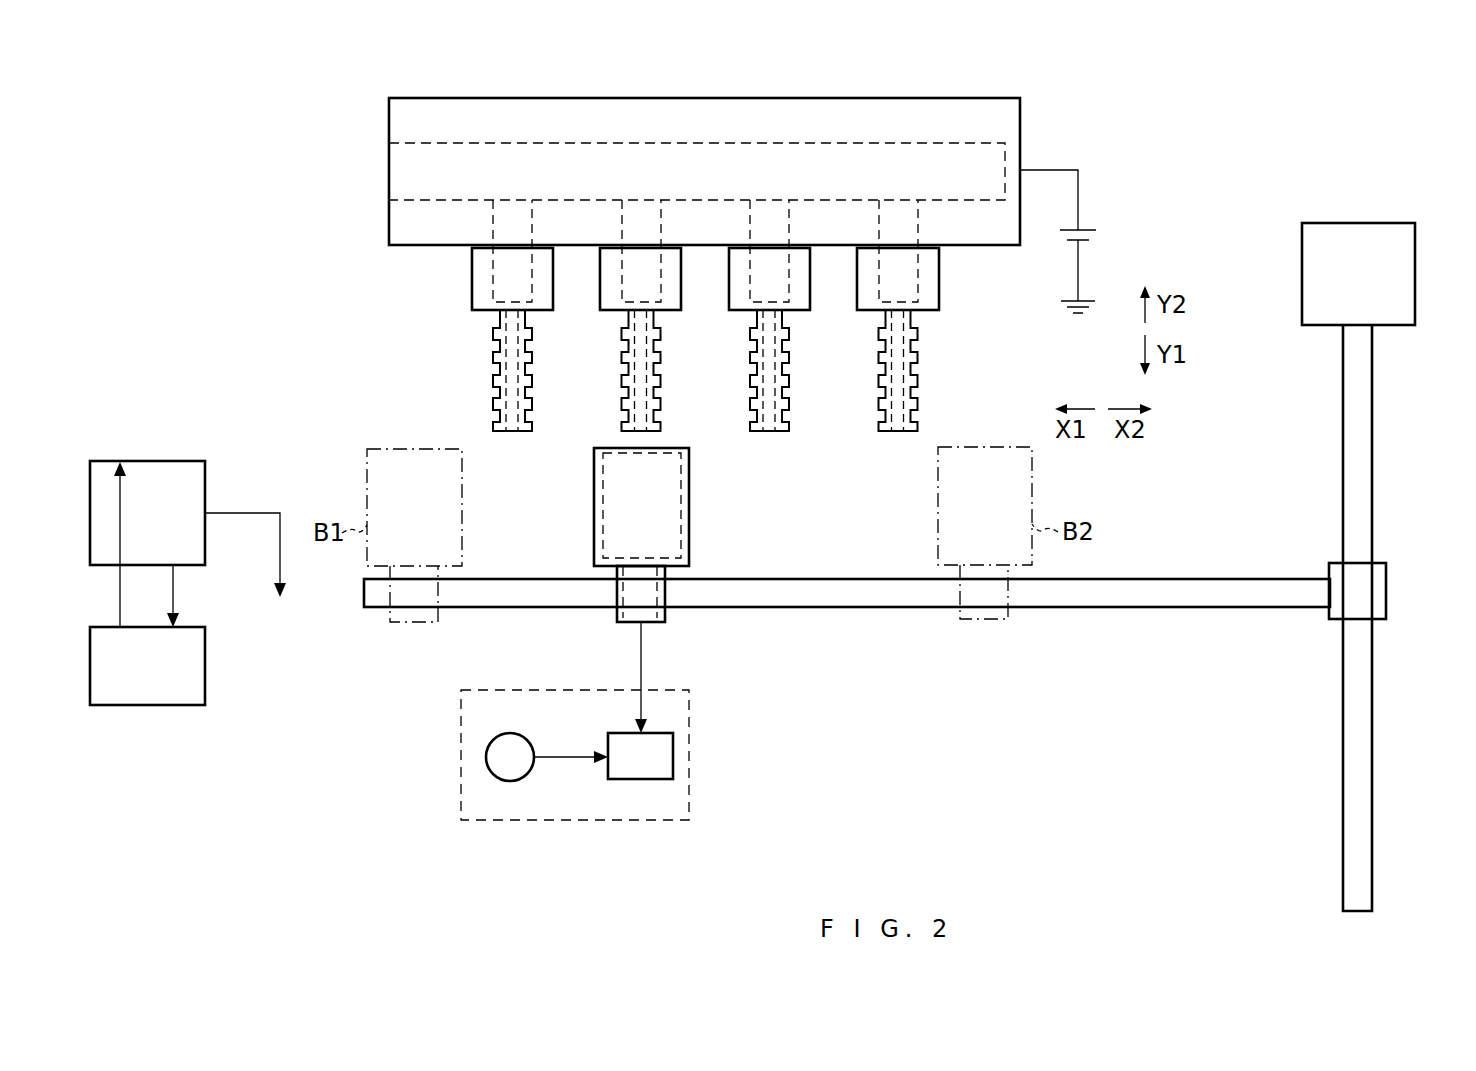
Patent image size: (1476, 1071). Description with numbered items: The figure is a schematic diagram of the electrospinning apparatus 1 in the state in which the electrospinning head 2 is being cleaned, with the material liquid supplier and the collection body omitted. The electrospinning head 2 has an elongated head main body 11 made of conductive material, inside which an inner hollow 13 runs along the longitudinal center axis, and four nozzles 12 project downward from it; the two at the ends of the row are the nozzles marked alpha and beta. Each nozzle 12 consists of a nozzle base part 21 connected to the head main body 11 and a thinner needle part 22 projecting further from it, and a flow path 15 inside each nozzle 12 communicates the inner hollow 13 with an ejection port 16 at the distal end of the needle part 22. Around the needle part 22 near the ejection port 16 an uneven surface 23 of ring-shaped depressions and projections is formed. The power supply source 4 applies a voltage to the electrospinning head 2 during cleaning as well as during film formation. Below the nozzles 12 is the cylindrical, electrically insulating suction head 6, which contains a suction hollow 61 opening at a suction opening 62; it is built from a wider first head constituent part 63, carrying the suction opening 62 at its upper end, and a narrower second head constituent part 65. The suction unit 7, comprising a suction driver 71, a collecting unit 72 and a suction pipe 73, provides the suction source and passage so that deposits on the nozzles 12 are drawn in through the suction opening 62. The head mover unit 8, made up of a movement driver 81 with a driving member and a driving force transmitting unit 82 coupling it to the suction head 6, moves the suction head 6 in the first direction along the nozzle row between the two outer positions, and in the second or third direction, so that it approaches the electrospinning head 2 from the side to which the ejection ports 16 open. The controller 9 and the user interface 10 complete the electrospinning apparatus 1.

The electrospinning apparatus 1 is at (1218, 92).
The electrospinning head 2 is at (957, 80).
The power supply source 4 is at (1104, 234).
The suction head 6 is at (358, 477).
The suction unit 7 is at (695, 722).
The head mover unit 8 is at (1398, 437).
The controller 9 is at (192, 448).
The user interface 10 is at (230, 667).
The head main body 11 is at (792, 130).
The nozzle 12 is at (962, 376).
The inner hollow 13 is at (653, 143).
The flow path 15 is at (493, 276).
The ejection port 16 is at (515, 432).
The nozzle base part 21 is at (472, 298).
The needle part 22 is at (500, 318).
The uneven surface 23 is at (493, 413).
The suction hollow 61 is at (670, 497).
The suction opening 62 is at (604, 448).
The first head constituent part 63 is at (594, 520).
The second head constituent part 65 is at (665, 612).
The suction driver 71 is at (510, 782).
The collecting unit 72 is at (652, 779).
The suction pipe 73 is at (641, 665).
The movement driver 81 is at (1415, 240).
The driving force transmitting unit 82 is at (1372, 508).